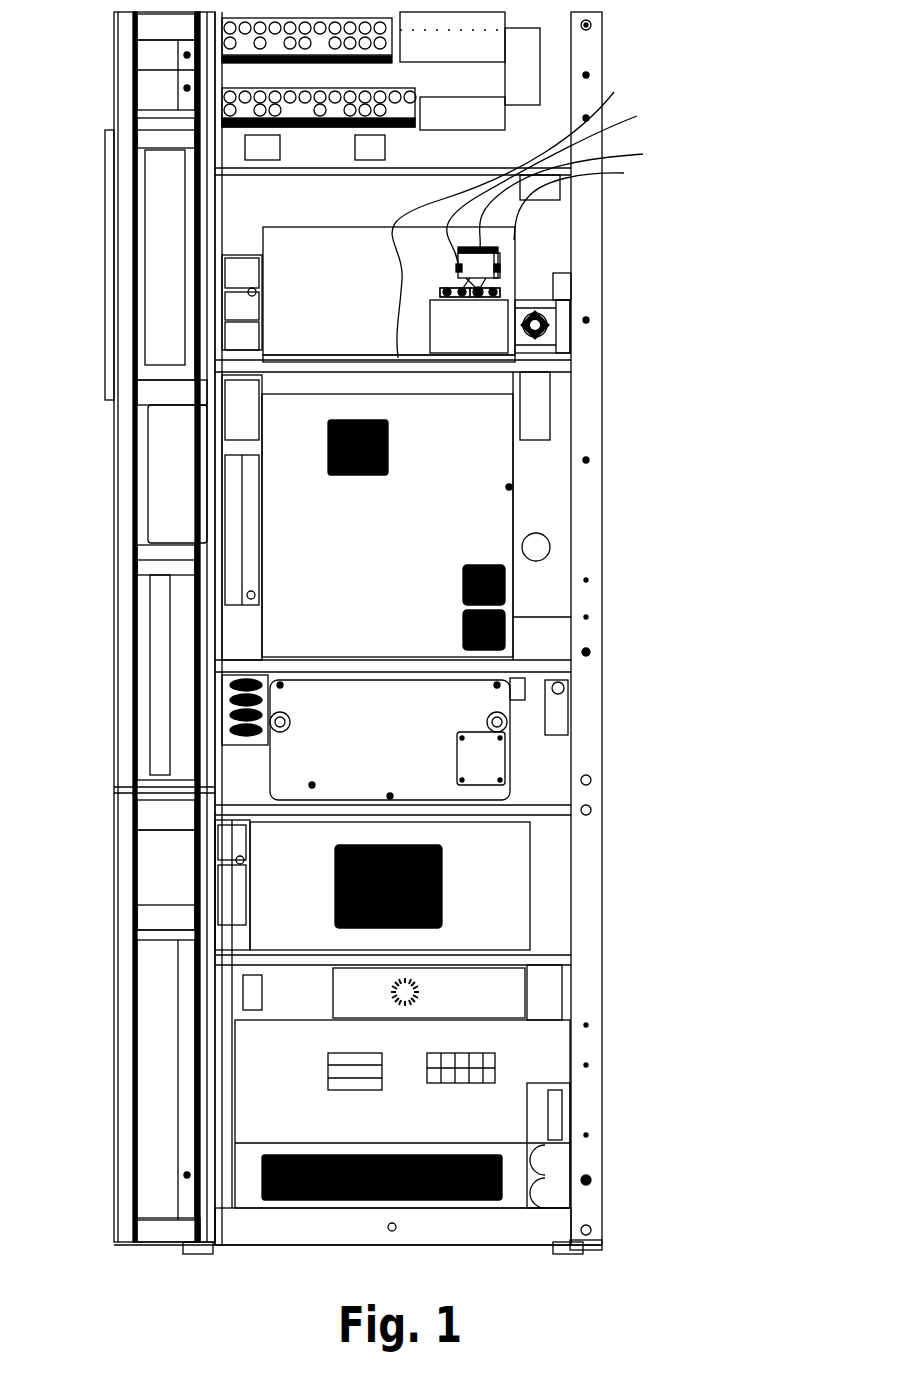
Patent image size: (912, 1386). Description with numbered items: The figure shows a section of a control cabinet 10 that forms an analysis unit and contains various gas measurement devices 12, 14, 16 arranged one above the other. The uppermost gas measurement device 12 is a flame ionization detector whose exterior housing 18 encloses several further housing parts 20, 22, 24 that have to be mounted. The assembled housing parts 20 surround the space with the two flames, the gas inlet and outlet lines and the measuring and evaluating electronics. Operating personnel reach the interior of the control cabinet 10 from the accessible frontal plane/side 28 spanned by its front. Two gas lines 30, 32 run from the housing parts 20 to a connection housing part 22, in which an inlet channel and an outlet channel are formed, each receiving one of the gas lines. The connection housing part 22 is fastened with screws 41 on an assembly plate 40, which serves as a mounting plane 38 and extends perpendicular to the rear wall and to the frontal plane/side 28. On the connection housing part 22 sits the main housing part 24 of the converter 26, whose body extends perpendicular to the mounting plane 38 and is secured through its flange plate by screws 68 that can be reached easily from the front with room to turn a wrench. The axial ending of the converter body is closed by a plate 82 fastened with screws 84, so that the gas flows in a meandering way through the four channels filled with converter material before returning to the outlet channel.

The control cabinet 10 is at (653, 128).
The gas measurement device 12 is at (523, 277).
The gas measurement device 14 is at (455, 511).
The gas measurement device 16 is at (455, 711).
The exterior housing 18 is at (290, 292).
The housing parts 20 is at (552, 355).
The connection housing part 22 is at (498, 281).
The main housing part 24 is at (490, 258).
The converter 26 is at (574, 193).
The accessible frontal plane/side 28 is at (548, 193).
The gas line 30 is at (445, 290).
The gas line 32 is at (515, 277).
The mounting plane 38 is at (447, 297).
The assembly plate 40 is at (483, 382).
The screws 41 is at (478, 297).
The screws 68 is at (516, 213).
The plate 82 is at (585, 202).
The screws 84 is at (550, 180).